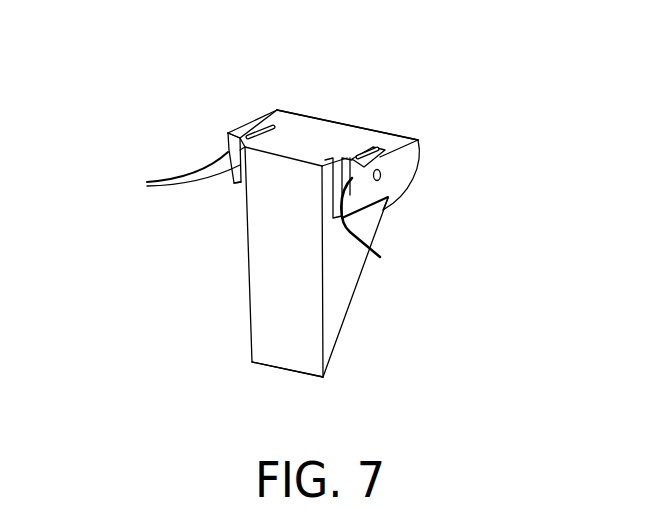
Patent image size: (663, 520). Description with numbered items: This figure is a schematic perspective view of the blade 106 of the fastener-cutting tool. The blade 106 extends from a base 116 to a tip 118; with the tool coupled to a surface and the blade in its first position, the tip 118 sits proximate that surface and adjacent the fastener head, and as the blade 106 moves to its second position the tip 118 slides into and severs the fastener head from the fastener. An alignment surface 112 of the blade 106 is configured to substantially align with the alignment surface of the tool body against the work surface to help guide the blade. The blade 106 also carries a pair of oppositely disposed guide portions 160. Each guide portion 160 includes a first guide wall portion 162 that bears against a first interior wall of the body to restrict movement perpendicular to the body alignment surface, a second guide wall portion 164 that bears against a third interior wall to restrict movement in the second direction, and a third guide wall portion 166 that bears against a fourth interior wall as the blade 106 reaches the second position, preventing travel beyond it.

The blade 106 is at (427, 105).
The alignment surface 112 is at (308, 297).
The base 116 is at (289, 107).
The tip 118 is at (262, 375).
The guide portion 160 is at (225, 148).
The first guide wall portion 162 is at (408, 275).
The second guide wall portion 164 is at (250, 130).
The third guide wall portion 166 is at (237, 203).